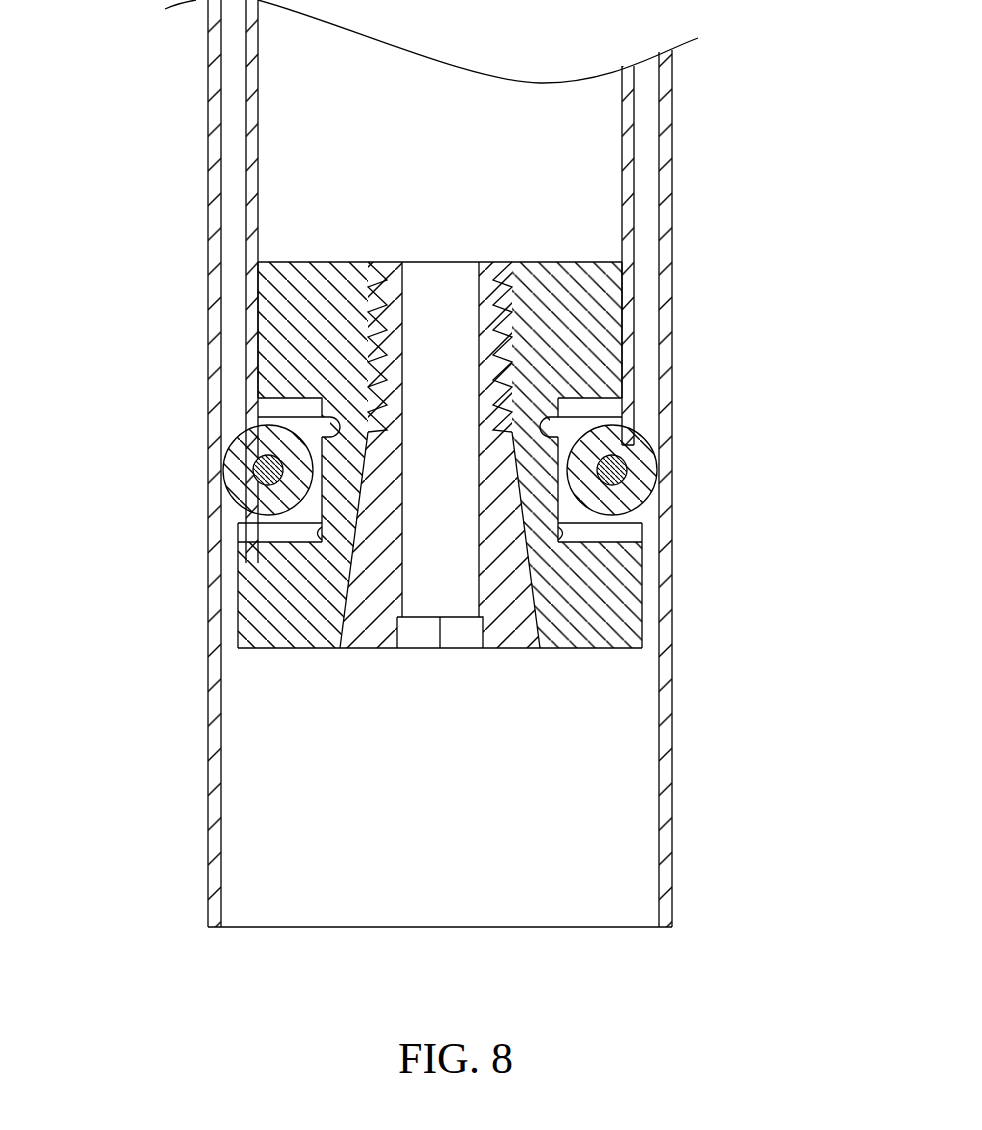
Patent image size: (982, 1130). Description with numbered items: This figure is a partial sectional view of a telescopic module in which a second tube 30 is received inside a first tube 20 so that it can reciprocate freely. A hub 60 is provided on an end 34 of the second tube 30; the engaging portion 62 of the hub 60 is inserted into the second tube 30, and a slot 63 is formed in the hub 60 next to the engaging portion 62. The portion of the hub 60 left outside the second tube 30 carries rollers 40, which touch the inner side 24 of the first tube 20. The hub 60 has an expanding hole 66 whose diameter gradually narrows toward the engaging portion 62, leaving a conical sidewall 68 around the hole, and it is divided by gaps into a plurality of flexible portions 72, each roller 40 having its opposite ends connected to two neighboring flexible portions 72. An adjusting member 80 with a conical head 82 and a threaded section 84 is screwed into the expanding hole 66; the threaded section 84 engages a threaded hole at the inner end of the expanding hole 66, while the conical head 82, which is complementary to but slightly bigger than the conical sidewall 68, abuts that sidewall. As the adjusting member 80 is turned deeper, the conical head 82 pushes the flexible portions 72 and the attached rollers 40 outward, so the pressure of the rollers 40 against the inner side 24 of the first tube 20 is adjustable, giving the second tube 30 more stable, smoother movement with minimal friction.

The first tube 20 is at (208, 131).
The second tube 30 is at (638, 153).
The inner side 24 is at (236, 303).
The hub 60 is at (600, 646).
The engaging portion 62 is at (311, 287).
The slot 63 is at (593, 407).
The threaded section 84 is at (498, 318).
The end 34 is at (640, 430).
The rollers 40 is at (286, 452).
The flexible portions 72 is at (318, 462).
The expanding hole 66 is at (357, 492).
The conical sidewall 68 is at (350, 562).
The conical head 82 is at (370, 579).
The adjusting member 80 is at (357, 647).